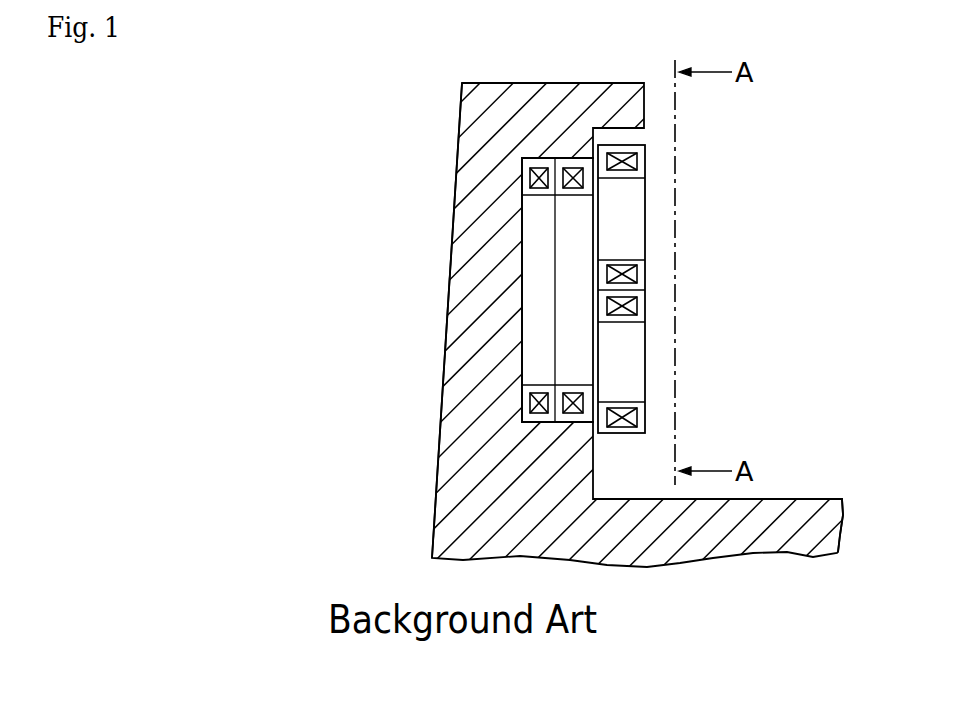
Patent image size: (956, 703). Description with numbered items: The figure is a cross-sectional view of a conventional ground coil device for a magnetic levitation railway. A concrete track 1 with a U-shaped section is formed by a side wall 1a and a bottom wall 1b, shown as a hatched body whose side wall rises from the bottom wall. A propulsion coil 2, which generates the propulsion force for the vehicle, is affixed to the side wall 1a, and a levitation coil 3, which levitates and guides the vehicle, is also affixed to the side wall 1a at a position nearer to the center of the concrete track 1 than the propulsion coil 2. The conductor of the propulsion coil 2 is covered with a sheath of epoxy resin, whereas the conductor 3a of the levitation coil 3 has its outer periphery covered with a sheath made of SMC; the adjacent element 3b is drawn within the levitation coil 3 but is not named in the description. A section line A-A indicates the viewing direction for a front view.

The concrete track 1 is at (460, 121).
The side wall 1a is at (455, 193).
The bottom wall 1b is at (812, 498).
The propulsion coil 2 is at (523, 275).
The levitation coil 3 is at (669, 289).
The conductor 3a is at (647, 250).
The coil element of assembly 3 3b is at (647, 272).